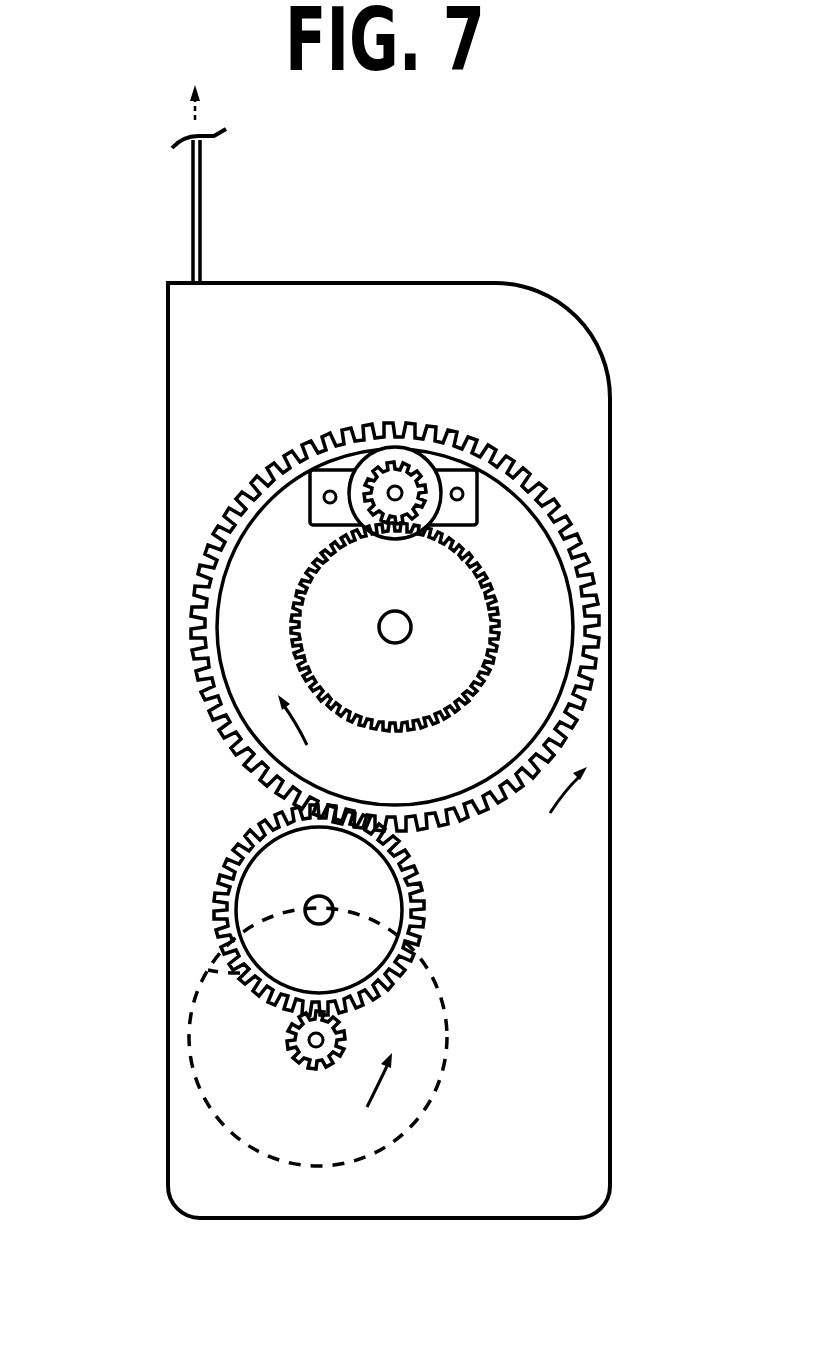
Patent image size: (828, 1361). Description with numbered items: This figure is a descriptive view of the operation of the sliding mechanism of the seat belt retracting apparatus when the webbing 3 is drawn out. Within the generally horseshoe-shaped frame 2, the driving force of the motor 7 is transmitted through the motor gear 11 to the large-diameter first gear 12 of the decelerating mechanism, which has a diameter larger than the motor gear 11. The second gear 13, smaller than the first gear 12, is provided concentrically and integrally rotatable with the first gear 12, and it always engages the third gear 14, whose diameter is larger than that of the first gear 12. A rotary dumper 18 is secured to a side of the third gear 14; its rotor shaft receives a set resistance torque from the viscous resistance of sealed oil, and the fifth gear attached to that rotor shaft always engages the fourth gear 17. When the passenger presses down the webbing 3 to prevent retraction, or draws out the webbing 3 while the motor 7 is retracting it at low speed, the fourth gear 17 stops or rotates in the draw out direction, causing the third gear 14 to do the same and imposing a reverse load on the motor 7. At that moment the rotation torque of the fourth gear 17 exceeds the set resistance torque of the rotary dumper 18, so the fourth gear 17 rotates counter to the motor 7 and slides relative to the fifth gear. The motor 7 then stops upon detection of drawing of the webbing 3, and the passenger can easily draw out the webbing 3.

The frame 2 is at (330, 310).
The webbing 3 is at (192, 213).
The motor 7 is at (233, 1135).
The motor gear 11 is at (293, 1063).
The first gear 12 is at (240, 973).
The second gear 13 is at (213, 892).
The third gear 14 is at (544, 714).
The fourth gear 17 is at (502, 608).
The rotary dumper 18 is at (424, 425).